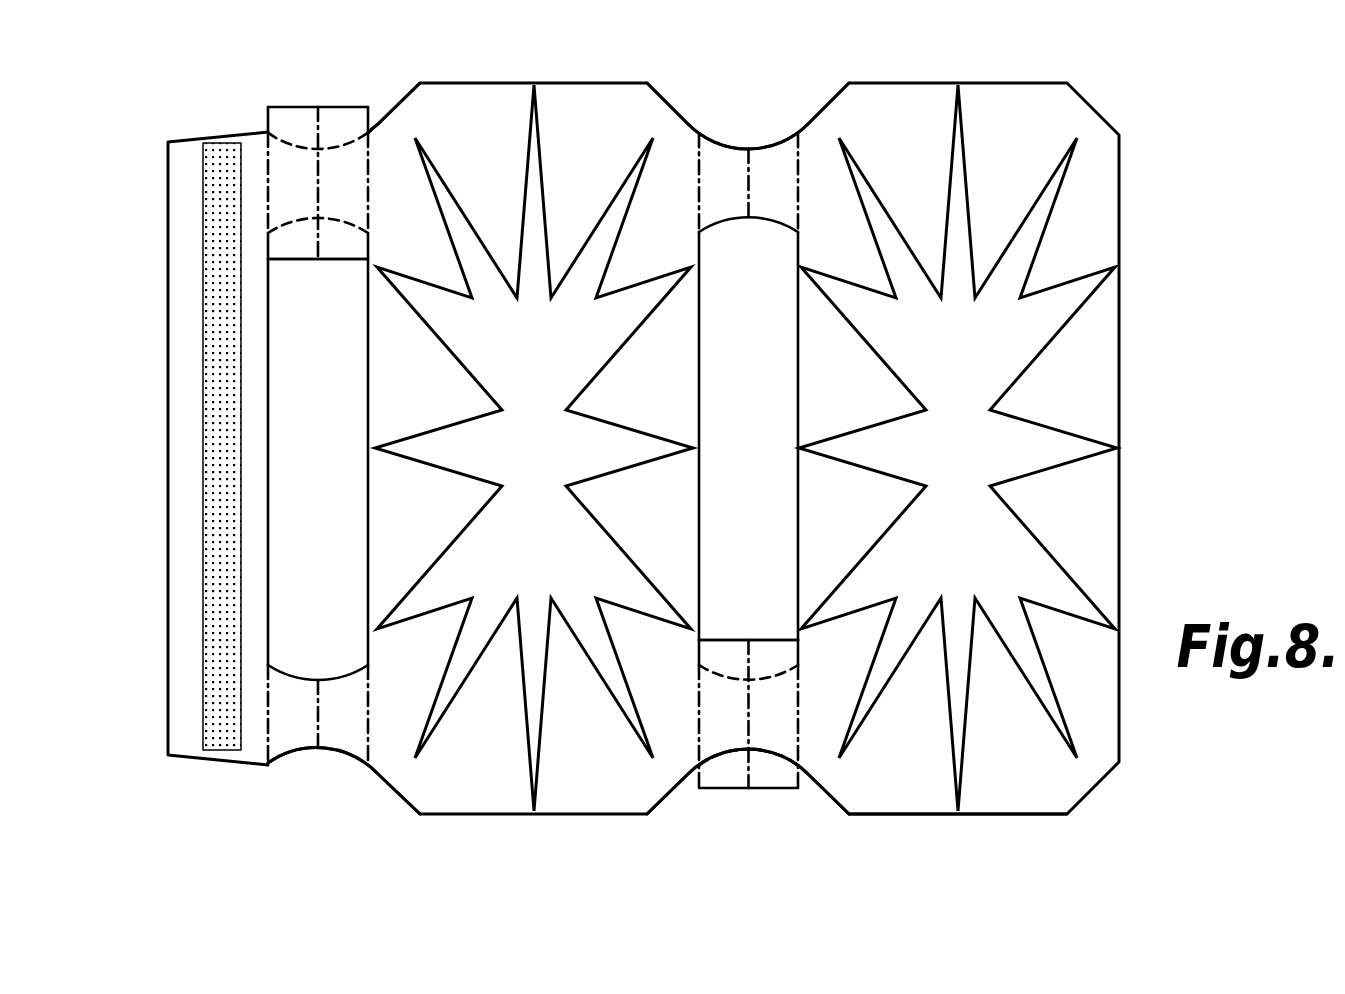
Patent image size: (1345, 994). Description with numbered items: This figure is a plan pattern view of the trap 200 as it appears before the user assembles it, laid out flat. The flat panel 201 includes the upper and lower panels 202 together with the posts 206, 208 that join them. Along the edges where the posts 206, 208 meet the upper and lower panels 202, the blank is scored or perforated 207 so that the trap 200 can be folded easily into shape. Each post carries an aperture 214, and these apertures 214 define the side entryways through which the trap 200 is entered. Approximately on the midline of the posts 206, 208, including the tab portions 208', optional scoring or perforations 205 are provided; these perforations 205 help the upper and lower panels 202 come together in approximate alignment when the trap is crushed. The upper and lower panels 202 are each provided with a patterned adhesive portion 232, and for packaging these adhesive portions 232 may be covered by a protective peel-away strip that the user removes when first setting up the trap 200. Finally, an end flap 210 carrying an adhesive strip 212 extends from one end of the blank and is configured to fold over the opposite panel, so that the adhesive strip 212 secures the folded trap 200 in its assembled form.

The trap 200 is at (1173, 98).
The flat panel 201 is at (995, 820).
The upper and lower panels 202 is at (1108, 215).
The scoring or perforations 205 is at (320, 167).
The post 206 is at (775, 158).
The scoring or perforation 207 is at (372, 173).
The post 208 is at (282, 420).
The tab portion 208' is at (449, 451).
The end flap 210 is at (182, 365).
The adhesive strip 212 is at (213, 200).
The aperture 214 is at (298, 478).
The patterned adhesive portion 232 is at (540, 165).